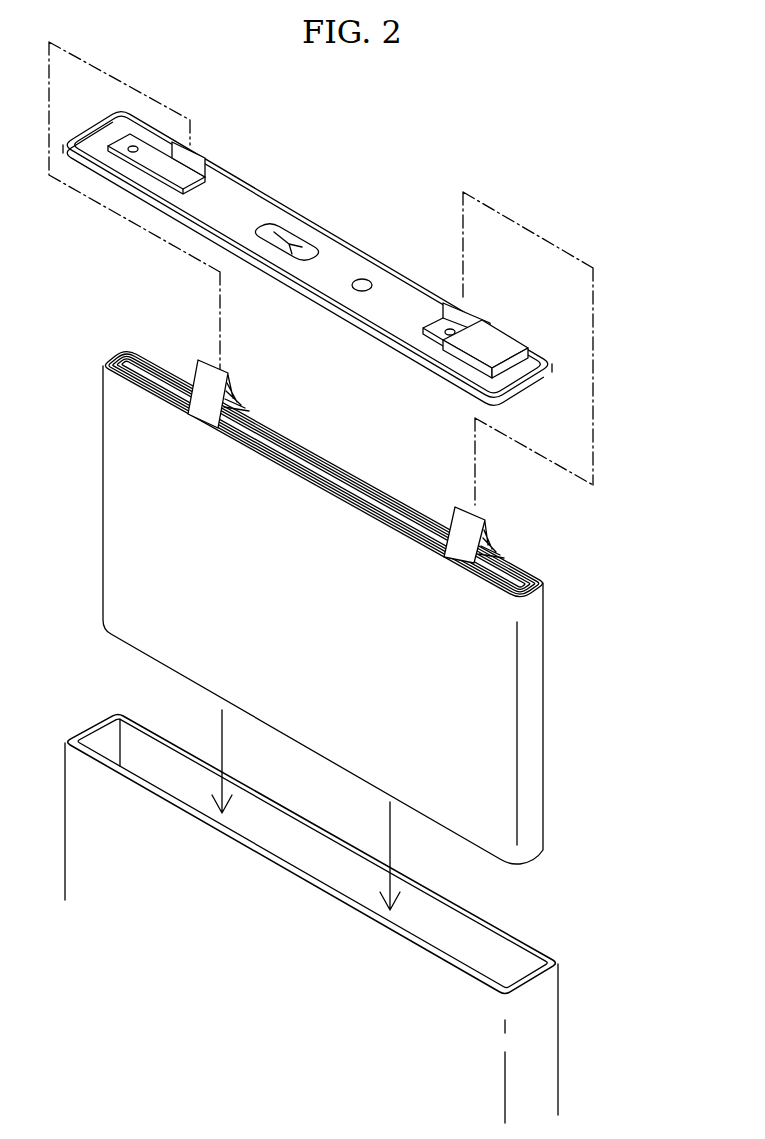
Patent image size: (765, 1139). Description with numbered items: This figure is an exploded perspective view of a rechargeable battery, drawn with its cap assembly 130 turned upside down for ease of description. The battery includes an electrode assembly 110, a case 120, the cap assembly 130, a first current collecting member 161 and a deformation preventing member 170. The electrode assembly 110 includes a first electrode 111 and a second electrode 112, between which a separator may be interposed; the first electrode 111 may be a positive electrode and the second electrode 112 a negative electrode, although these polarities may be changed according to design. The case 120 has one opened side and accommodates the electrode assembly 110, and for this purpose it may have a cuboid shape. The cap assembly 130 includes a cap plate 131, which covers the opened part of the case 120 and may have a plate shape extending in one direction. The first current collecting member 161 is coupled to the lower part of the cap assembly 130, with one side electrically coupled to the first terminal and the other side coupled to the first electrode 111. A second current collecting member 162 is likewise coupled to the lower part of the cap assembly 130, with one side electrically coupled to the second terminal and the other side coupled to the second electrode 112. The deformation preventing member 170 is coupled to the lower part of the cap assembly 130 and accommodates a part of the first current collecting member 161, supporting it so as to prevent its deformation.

The electrode assembly 110 is at (558, 683).
The first electrode 111 is at (456, 517).
The second electrode 112 is at (231, 377).
The case 120 is at (546, 1045).
The cap assembly 130 is at (293, 193).
The cap plate 131 is at (351, 258).
The first current collecting member 161 is at (476, 323).
The second current collecting member 162 is at (190, 160).
The deformation preventing member 170 is at (501, 340).